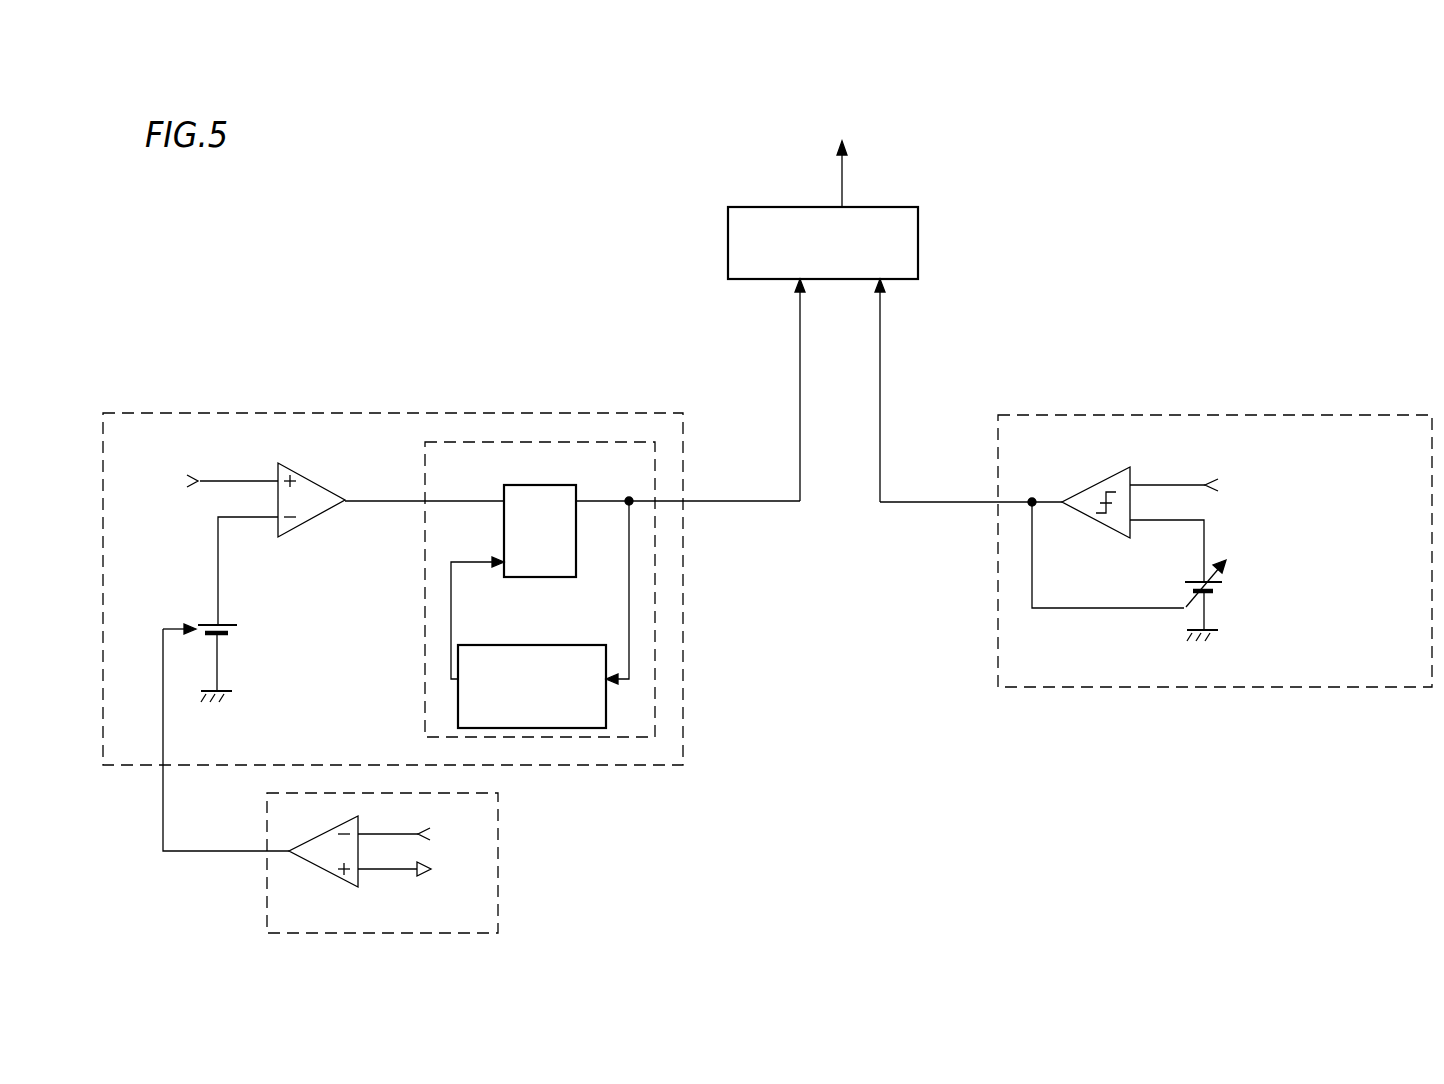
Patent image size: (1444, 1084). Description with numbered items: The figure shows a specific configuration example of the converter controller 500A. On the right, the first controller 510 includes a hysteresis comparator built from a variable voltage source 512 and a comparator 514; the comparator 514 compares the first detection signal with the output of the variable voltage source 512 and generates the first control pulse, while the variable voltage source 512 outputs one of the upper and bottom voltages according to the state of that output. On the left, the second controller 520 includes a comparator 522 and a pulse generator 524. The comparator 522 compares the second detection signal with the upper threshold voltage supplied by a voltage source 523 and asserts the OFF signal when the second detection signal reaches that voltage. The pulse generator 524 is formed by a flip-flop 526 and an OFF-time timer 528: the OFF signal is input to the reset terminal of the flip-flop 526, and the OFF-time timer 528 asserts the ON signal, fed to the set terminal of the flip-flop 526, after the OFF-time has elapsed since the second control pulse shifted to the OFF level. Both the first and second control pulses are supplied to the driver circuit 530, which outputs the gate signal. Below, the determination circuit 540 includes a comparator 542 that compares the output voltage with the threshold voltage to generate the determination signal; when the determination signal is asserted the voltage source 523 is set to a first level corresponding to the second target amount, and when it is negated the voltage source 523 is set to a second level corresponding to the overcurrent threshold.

The converter controller 500A is at (1207, 88).
The first controller 510 is at (1183, 415).
The variable voltage source 512 is at (1226, 590).
The comparator 514 is at (1083, 484).
The second controller 520 is at (382, 413).
The comparator 522 is at (317, 481).
The voltage source 523 is at (240, 631).
The pulse generator 524 is at (423, 710).
The flip-flop 526 is at (532, 483).
The OFF-time timer 528 is at (519, 643).
The driver circuit 530 is at (920, 240).
The determination circuit 540 is at (498, 893).
The comparator 542 is at (323, 869).